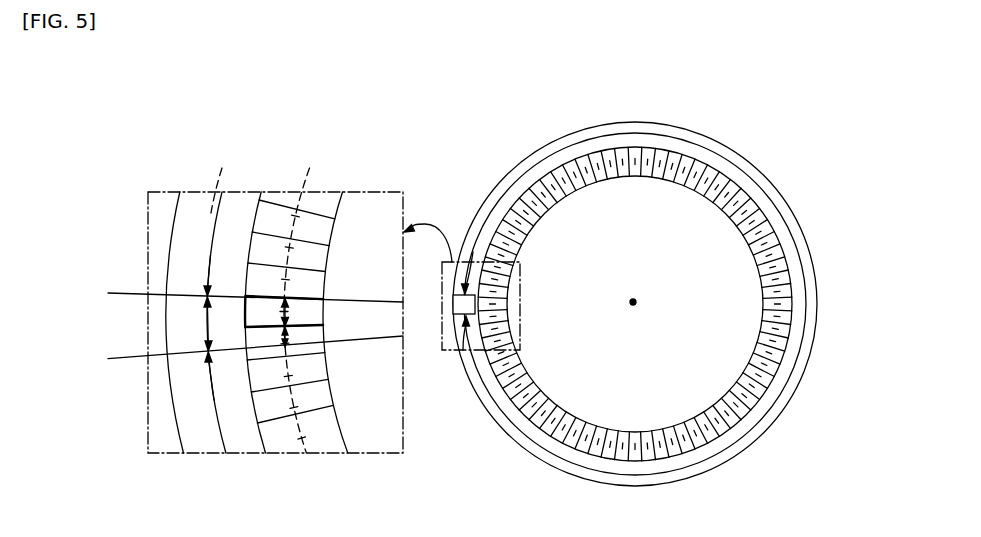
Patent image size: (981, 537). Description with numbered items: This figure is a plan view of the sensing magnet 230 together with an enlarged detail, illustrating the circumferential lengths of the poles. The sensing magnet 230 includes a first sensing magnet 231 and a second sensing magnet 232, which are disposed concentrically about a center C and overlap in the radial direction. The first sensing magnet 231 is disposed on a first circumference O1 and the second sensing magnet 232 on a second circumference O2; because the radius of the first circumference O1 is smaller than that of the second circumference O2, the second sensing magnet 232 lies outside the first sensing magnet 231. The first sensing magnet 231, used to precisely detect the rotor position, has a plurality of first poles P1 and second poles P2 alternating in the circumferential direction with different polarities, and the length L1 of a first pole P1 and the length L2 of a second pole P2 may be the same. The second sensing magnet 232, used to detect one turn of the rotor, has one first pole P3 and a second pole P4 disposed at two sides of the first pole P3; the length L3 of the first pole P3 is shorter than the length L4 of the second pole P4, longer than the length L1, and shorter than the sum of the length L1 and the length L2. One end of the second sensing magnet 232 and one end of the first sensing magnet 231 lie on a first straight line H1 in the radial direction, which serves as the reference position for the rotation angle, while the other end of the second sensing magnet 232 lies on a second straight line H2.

The sensing magnet 230 is at (422, 301).
The first sensing magnet 231 is at (352, 418).
The second sensing magnet 232 is at (164, 204).
The first circumference O1 is at (299, 299).
The second circumference O2 is at (219, 179).
The first straight line H1 is at (240, 296).
The second straight line H2 is at (240, 354).
The first pole P1 is at (324, 310).
The second pole P2 is at (324, 342).
The first pole P3 is at (178, 318).
The second pole P4 is at (185, 402).
The length of the first pole L1 is at (298, 312).
The length of the second pole L2 is at (298, 342).
The length of the first pole L3 is at (218, 324).
The length of the second pole L4 is at (627, 97).
The center C is at (643, 305).